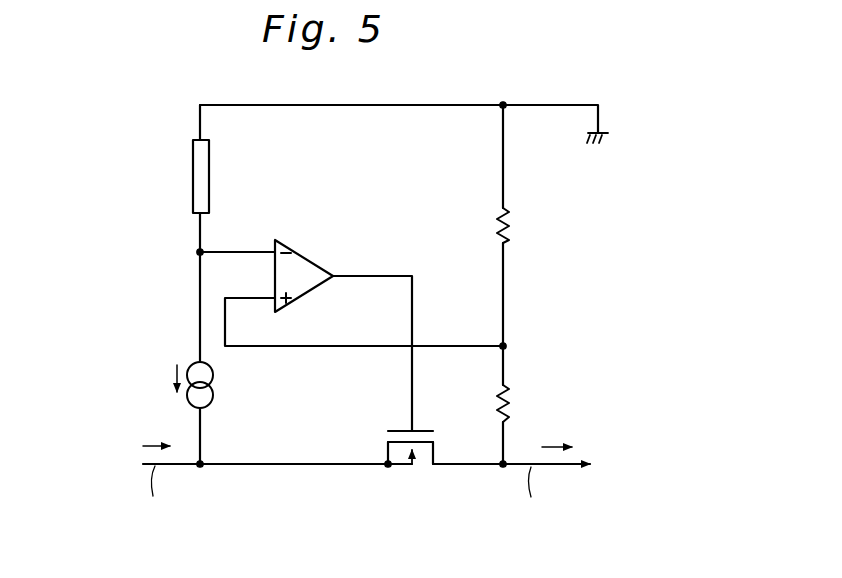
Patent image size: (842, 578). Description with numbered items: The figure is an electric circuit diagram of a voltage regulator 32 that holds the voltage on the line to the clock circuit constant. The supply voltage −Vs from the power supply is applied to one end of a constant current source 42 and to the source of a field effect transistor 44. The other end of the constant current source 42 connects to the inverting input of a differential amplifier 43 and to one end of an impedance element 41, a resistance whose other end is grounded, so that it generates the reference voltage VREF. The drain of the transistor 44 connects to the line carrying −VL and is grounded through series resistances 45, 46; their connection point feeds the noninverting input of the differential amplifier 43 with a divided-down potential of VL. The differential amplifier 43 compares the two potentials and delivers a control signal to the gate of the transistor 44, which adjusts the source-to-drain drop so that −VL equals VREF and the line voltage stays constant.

The voltage regulator 32 is at (172, 100).
The impedance element 41 is at (204, 182).
The constant current source 42 is at (208, 374).
The differential amplifier 43 is at (318, 274).
The field effect transistor 44 is at (395, 430).
The resistance 45 is at (509, 398).
The resistance 46 is at (509, 227).